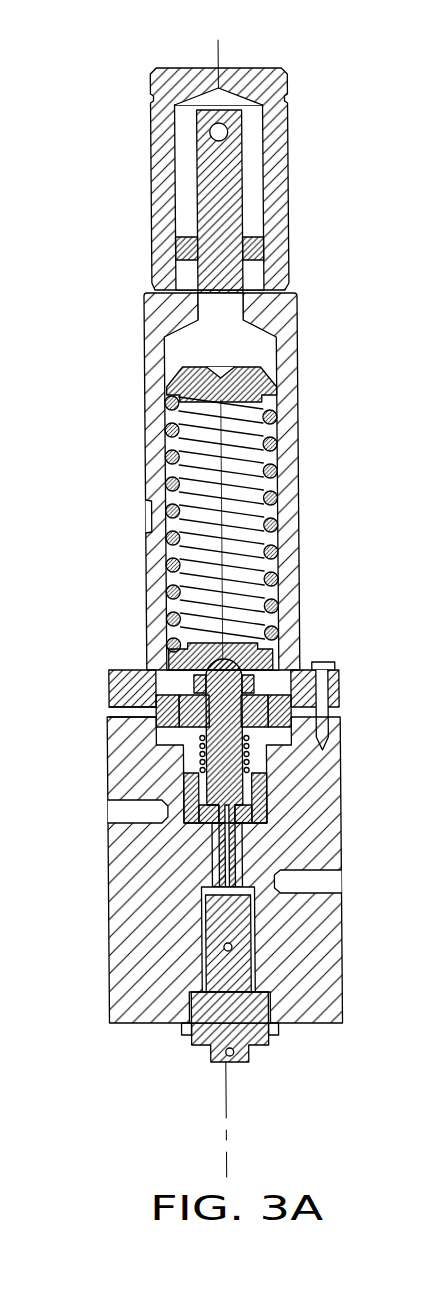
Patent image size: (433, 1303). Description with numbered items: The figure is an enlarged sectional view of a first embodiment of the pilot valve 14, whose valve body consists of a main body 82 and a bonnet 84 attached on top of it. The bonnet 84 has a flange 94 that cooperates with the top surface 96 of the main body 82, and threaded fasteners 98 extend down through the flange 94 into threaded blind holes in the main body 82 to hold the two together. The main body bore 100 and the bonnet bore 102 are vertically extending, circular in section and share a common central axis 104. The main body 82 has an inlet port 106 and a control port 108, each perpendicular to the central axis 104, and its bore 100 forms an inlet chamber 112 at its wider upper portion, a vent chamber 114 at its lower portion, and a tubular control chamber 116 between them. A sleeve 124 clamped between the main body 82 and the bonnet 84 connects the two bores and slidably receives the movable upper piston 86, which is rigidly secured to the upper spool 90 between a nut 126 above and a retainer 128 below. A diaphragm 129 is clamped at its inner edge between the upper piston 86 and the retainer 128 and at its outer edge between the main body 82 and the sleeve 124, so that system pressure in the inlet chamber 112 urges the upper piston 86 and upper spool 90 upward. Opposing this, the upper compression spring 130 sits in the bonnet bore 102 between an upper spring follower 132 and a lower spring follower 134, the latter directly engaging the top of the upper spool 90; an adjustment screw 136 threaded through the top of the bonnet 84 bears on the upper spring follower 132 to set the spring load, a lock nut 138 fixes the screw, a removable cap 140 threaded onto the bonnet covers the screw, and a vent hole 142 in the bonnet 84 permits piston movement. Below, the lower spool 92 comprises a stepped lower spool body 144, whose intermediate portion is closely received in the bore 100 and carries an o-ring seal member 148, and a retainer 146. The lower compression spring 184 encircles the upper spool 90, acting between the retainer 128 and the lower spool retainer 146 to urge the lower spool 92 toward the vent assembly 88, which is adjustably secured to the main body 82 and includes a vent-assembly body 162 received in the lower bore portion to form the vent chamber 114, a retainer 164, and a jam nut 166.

The pilot valve 14 is at (346, 340).
The main body 82 is at (340, 760).
The bonnet 84 is at (299, 485).
The upper piston 86 is at (155, 700).
The vent assembly 88 is at (262, 1048).
The upper spool 90 is at (194, 690).
The lower spool 92 is at (306, 803).
The flange 94 is at (118, 672).
The top surface 96 is at (152, 712).
The threaded fasteners 98 is at (322, 662).
The bore 100 is at (268, 712).
The bore 102 is at (283, 545).
The central axis 104 is at (224, 46).
The inlet port 106 is at (108, 816).
The control port 108 is at (340, 877).
The inlet chamber 112 is at (183, 738).
The vent chamber 114 is at (202, 958).
The control chamber 116 is at (222, 885).
The sleeve 124 is at (300, 692).
The nut 126 is at (207, 746).
The retainer 128 is at (183, 710).
The diaphragm 129 is at (282, 752).
The upper compression spring 130 is at (280, 444).
The upper spring follower 132 is at (182, 384).
The lower spring follower 134 is at (186, 652).
The adjustment screw 136 is at (236, 146).
The lock nut 138 is at (268, 250).
The cap 140 is at (292, 178).
The vent hole 142 is at (148, 517).
The lower spool body 144 is at (265, 826).
The retainer 146 is at (266, 790).
The seal member 148 is at (216, 853).
The vent-assembly body 162 is at (282, 1053).
The retainer 164 is at (204, 918).
The jam nut 166 is at (275, 1030).
The lower compression spring 184 is at (196, 760).